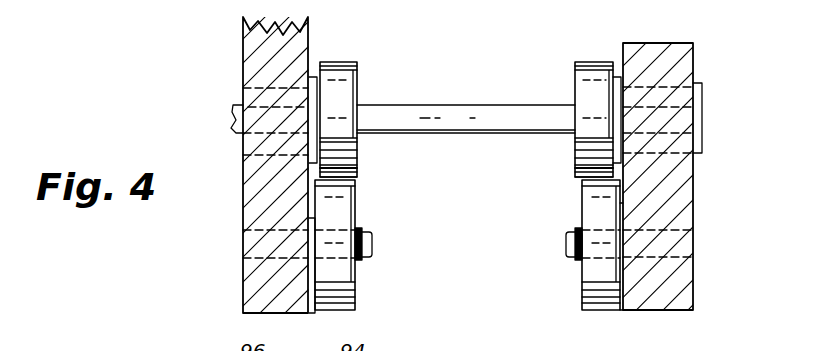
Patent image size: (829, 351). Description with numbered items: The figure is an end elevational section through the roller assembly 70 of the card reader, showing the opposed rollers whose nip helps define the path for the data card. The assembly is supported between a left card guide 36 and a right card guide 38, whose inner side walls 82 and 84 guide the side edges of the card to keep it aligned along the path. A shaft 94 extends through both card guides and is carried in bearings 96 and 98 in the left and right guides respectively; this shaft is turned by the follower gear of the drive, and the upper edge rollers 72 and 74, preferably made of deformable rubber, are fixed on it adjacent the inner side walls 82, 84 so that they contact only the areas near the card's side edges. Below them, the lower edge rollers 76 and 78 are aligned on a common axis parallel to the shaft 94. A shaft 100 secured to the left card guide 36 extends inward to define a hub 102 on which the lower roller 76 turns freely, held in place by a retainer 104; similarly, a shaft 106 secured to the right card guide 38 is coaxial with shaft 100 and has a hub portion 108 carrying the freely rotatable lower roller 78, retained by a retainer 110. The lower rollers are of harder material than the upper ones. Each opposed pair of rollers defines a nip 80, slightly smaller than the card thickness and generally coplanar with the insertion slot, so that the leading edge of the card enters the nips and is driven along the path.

The left card guide 36 is at (247, 296).
The right card guide 38 is at (690, 312).
The roller assembly 70 is at (216, 228).
The upper edge roller 72 is at (330, 63).
The upper edge roller 74 is at (585, 62).
The lower edge roller 76 is at (343, 308).
The lower edge roller 78 is at (596, 312).
The nip 80 is at (370, 183).
The inner side wall 82 is at (355, 168).
The inner side wall 84 is at (590, 162).
The shaft 94 is at (233, 108).
The bearing 96 is at (240, 80).
The bearing 98 is at (690, 72).
The shaft 100 is at (243, 268).
The hub 102 is at (390, 230).
The retainer 104 is at (365, 262).
The shaft 106 is at (695, 268).
The hub portion 108 is at (566, 246).
The retainer 110 is at (573, 260).